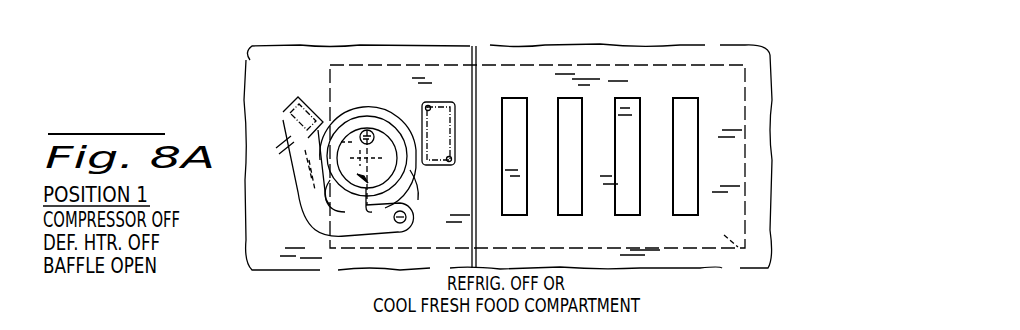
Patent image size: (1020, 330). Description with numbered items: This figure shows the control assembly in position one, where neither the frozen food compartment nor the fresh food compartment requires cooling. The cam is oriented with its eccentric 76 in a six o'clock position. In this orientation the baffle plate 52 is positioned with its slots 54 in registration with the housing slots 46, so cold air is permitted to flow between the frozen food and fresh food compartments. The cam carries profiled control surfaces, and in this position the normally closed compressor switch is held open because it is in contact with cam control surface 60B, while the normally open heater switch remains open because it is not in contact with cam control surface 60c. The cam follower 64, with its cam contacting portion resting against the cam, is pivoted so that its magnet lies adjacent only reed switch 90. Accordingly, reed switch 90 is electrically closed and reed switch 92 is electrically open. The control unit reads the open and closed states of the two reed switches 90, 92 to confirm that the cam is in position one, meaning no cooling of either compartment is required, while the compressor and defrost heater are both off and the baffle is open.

The baffle plate 52 is at (742, 249).
The housing wall slots 46 is at (537, 156).
The slots 54 is at (504, 200).
The cam control surface 60c is at (350, 100).
The cam control surface 60B is at (415, 166).
The eccentric 76 is at (369, 130).
The cam follower 64 is at (296, 206).
The reed switch 90 is at (266, 140).
The reed switch 92 is at (288, 142).